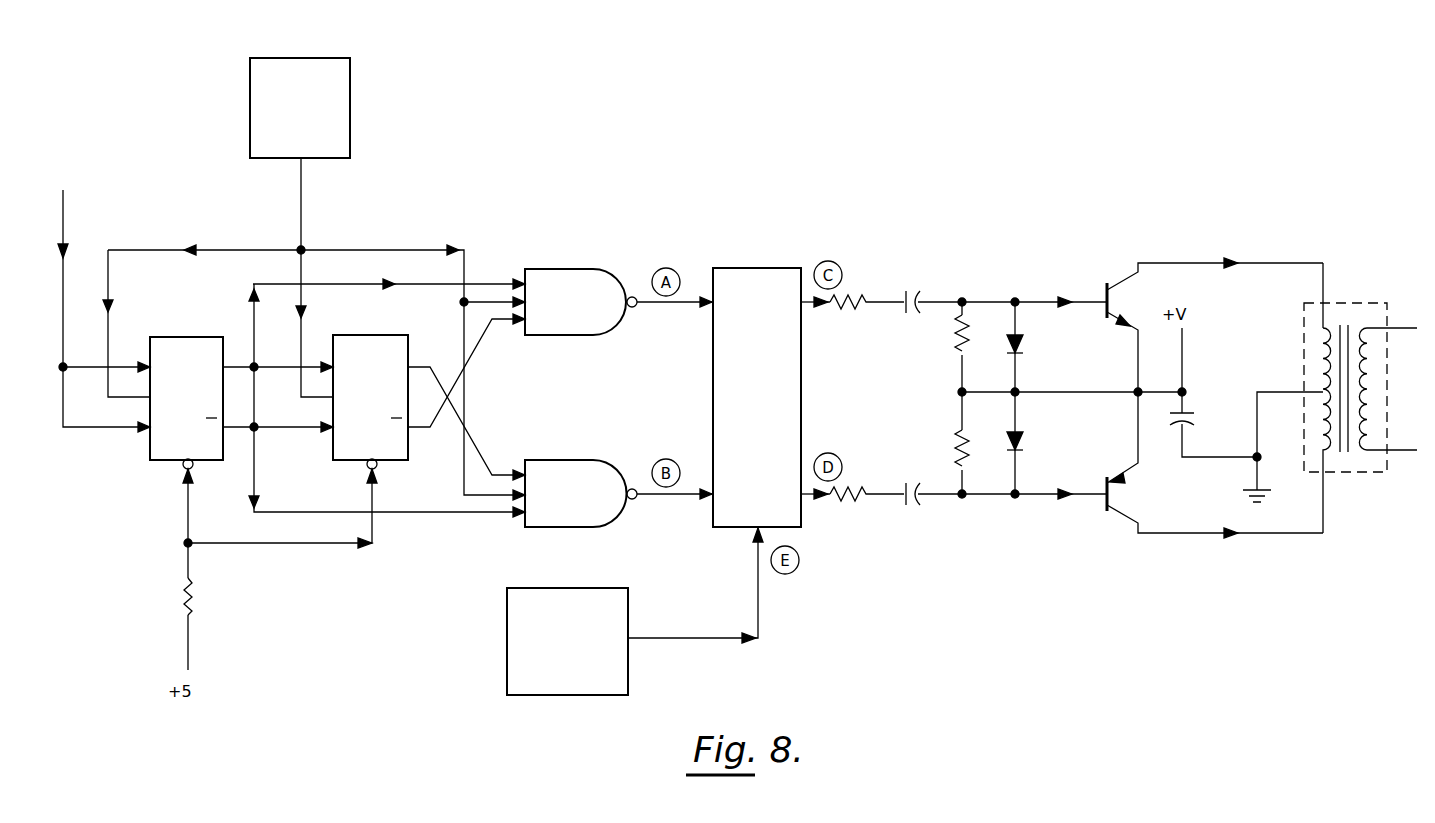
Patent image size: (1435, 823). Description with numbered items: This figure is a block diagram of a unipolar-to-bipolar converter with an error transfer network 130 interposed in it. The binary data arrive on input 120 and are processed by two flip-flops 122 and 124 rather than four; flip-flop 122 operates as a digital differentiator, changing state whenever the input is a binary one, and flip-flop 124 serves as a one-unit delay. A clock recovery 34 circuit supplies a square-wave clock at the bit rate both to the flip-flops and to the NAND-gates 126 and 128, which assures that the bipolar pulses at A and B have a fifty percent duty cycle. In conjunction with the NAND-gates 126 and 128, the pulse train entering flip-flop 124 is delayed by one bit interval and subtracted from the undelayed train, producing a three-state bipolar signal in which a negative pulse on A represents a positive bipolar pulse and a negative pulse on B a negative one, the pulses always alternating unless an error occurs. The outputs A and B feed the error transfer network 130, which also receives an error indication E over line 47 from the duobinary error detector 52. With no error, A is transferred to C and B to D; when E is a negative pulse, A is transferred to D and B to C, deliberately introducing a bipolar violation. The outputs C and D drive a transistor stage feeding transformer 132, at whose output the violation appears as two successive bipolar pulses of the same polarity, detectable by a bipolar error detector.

The clock recovery 34 is at (352, 58).
The data input line 120 is at (65, 220).
The flip-flop 122 is at (197, 337).
The flip-flop 124 is at (381, 335).
The NAND-gate 126 is at (604, 336).
The NAND-gate 128 is at (606, 460).
The error transfer network 130 is at (757, 268).
The transformer 132 is at (1358, 303).
The error signal line 47 is at (759, 617).
The duobinary error detector 52 is at (562, 695).